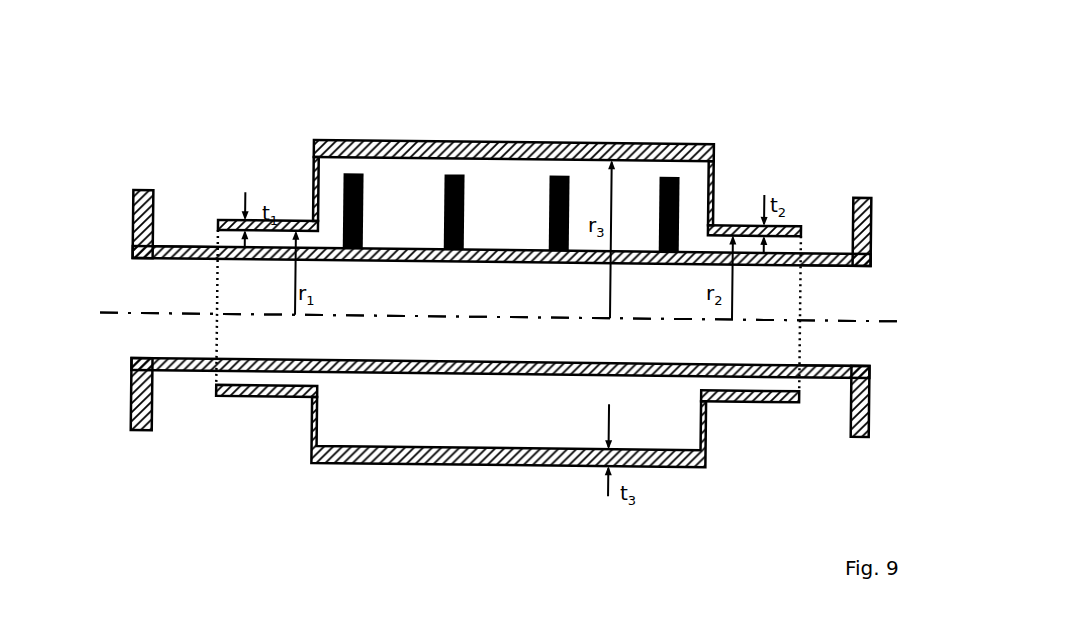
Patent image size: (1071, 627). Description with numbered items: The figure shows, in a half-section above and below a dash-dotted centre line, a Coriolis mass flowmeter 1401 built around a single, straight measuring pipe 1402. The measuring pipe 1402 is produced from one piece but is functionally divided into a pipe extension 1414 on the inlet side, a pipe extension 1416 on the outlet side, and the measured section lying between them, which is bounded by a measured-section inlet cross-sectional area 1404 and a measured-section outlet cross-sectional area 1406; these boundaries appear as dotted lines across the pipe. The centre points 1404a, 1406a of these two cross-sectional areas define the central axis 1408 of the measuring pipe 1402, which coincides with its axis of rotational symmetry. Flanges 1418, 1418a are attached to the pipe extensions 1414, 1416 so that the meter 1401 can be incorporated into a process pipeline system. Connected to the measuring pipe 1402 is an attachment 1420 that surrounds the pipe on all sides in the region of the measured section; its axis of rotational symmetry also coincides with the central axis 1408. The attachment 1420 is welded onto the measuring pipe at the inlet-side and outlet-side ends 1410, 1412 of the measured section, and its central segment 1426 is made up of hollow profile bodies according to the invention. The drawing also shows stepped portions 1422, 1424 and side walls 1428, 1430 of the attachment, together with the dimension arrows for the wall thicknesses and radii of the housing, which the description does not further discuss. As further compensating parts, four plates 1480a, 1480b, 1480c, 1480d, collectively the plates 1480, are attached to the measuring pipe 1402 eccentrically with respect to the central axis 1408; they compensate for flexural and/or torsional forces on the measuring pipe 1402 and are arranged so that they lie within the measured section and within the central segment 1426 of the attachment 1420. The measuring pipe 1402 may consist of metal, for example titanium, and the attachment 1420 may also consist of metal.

The Coriolis mass flowmeter 1401 is at (407, 542).
The measuring pipe 1402 is at (505, 376).
The measured-section inlet cross-sectional area 1404 is at (216, 343).
The centre point of measured-section inlet cross-sectional area 1404a is at (217, 313).
The measured-section outlet cross-sectional area 1406 is at (808, 343).
The centre point of measured-section outlet cross-sectional area 1406a is at (808, 321).
The central axis 1408 is at (897, 325).
The inlet-side end of measured section 1410 is at (216, 231).
The outlet-side end of measured section 1412 is at (803, 253).
The pipe extension on the inlet side 1414 is at (170, 371).
The pipe extension on the outlet side 1416 is at (828, 378).
The flange 1418 is at (131, 193).
The flange 1418a is at (866, 196).
The attachment 1420 is at (392, 139).
The first step 1422 is at (248, 396).
The second step 1424 is at (743, 402).
The central segment 1426 is at (455, 466).
The housing first side wall 1428 is at (311, 172).
The housing second side wall 1430 is at (713, 176).
The magnets 1480 is at (511, 169).
The plate 1480a is at (363, 222).
The plate 1480b is at (464, 224).
The plate 1480c is at (547, 183).
The plate 1480d is at (657, 189).